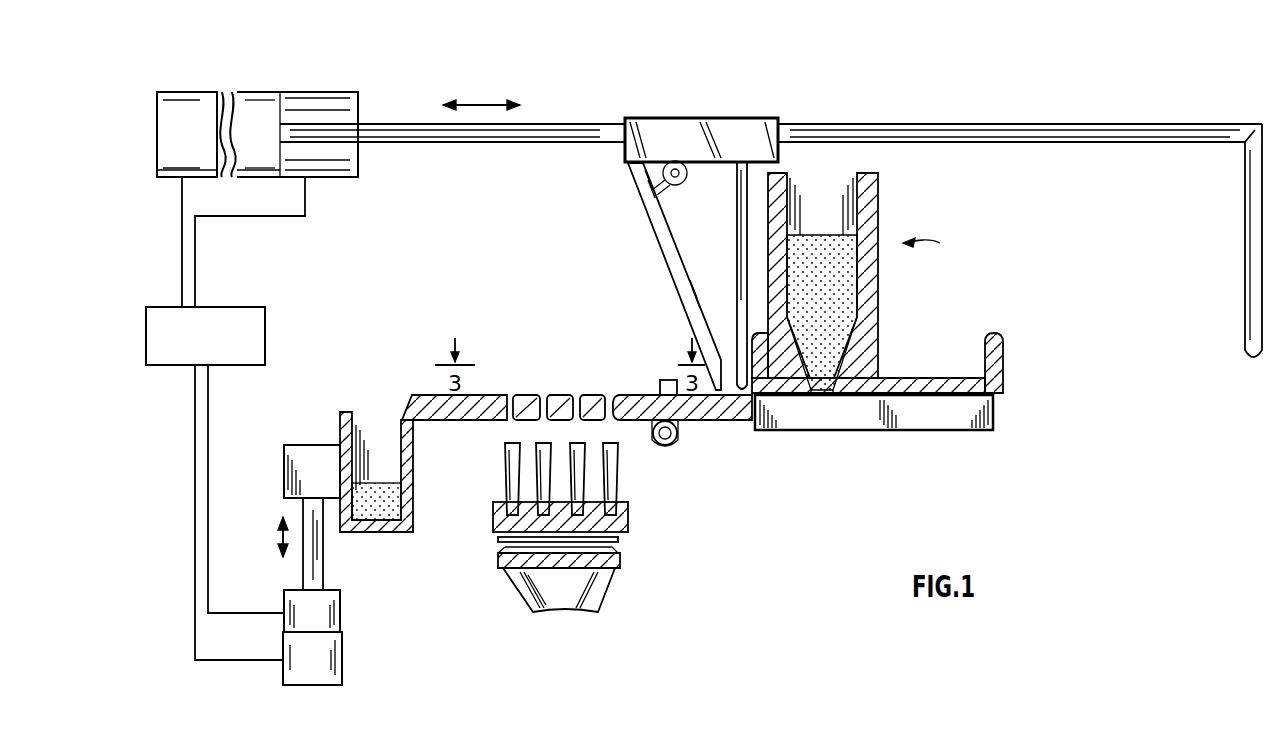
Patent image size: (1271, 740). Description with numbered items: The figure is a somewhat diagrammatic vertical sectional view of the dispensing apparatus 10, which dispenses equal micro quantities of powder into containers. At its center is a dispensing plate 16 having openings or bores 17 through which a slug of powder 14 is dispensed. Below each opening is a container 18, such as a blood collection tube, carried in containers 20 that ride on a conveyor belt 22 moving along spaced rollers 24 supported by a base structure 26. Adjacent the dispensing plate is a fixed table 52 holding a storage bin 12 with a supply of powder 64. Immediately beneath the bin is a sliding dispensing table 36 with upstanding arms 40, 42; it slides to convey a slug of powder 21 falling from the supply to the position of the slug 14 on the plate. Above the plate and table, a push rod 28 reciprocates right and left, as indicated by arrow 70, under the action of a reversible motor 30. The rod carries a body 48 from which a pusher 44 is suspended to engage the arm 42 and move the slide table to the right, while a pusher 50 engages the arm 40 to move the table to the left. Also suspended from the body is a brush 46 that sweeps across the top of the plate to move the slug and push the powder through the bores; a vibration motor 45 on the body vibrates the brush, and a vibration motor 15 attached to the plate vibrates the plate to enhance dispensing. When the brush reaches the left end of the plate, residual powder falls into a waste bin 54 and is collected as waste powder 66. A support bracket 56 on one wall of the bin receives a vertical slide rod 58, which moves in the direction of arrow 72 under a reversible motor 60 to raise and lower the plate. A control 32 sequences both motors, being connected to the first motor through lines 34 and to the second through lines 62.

The dispensing apparatus 10 is at (936, 248).
The storage bin 12 is at (878, 322).
The slug of powder 14 is at (662, 380).
The vibration motor 15 is at (677, 438).
The dispensing plate 16 is at (722, 422).
The openings or bores 17 is at (568, 392).
The container 18 is at (612, 460).
The containers 20 is at (622, 520).
The slug of powder 21 is at (822, 396).
The conveyor belt 22 is at (618, 540).
The rollers 24 is at (615, 566).
The base structure 26 is at (574, 588).
The push rod 28 is at (556, 124).
The reversible motor 30 is at (215, 100).
The control 32 is at (242, 312).
The lines 34 is at (185, 192).
The sliding dispensing table 36 is at (948, 385).
The upstanding arm 40 is at (1003, 352).
The upstanding arm 42 is at (757, 350).
The pusher 44 is at (736, 238).
The vibration motor 45 is at (680, 175).
The brush 46 is at (664, 240).
The body 48 is at (684, 128).
The pusher 50 is at (1245, 270).
The fixed table 52 is at (920, 415).
The waste bin 54 is at (413, 452).
The support bracket 56 is at (310, 455).
The vertical slide rod 58 is at (323, 558).
The reversible motor 60 is at (335, 650).
The lines 62 is at (195, 448).
The powder 64 is at (845, 290).
The waste powder 66 is at (380, 505).
The arrow 70 is at (480, 105).
The arrow 72 is at (278, 542).